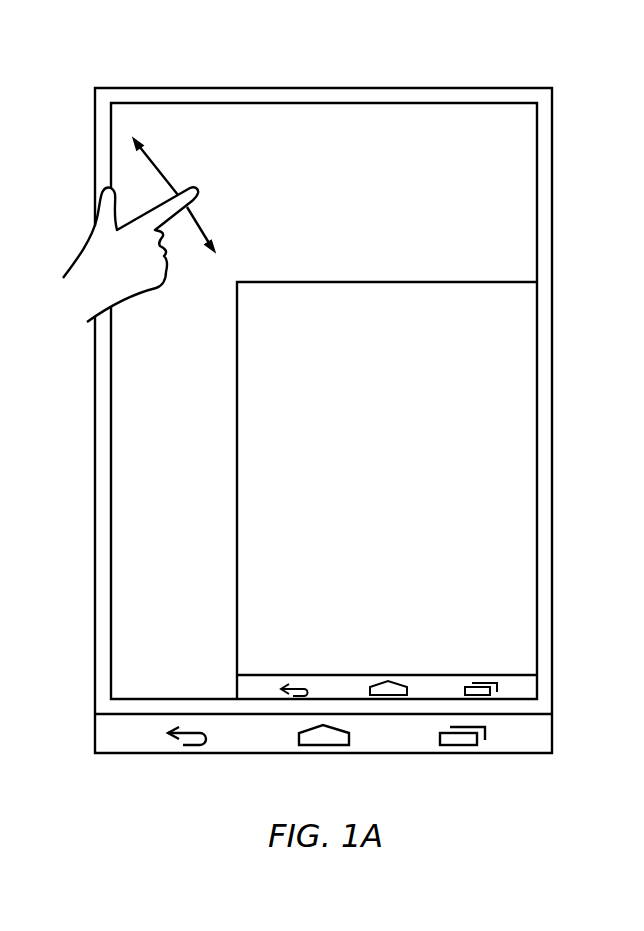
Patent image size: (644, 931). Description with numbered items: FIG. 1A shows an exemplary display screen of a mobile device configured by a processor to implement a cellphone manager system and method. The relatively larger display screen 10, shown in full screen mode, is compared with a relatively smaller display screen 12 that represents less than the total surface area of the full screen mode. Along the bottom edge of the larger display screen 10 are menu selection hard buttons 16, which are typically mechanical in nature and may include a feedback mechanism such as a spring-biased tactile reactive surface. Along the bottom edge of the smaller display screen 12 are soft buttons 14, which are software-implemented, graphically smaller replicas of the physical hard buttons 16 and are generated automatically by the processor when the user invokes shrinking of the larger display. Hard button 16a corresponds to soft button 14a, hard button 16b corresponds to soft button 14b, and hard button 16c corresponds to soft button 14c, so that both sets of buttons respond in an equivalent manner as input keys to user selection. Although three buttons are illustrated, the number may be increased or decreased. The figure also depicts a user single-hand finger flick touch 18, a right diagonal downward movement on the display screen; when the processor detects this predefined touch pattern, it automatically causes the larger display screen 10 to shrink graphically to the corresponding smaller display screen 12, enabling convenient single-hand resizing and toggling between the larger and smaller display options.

The display screen 10 is at (432, 88).
The display screen 12 is at (437, 282).
The soft buttons 14 is at (523, 688).
The soft button 14a is at (297, 682).
The soft button 14b is at (390, 682).
The soft button 14c is at (477, 683).
The hard buttons 16 is at (535, 735).
The hard button 16a is at (195, 747).
The hard button 16b is at (323, 746).
The hard button 16c is at (458, 746).
The finger flick touch 18 is at (186, 169).